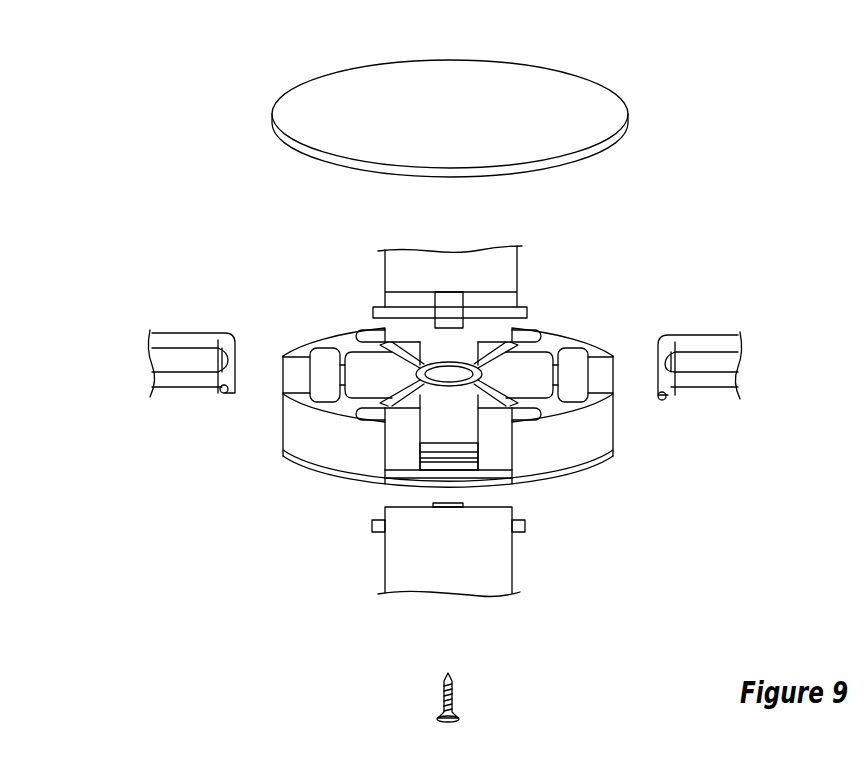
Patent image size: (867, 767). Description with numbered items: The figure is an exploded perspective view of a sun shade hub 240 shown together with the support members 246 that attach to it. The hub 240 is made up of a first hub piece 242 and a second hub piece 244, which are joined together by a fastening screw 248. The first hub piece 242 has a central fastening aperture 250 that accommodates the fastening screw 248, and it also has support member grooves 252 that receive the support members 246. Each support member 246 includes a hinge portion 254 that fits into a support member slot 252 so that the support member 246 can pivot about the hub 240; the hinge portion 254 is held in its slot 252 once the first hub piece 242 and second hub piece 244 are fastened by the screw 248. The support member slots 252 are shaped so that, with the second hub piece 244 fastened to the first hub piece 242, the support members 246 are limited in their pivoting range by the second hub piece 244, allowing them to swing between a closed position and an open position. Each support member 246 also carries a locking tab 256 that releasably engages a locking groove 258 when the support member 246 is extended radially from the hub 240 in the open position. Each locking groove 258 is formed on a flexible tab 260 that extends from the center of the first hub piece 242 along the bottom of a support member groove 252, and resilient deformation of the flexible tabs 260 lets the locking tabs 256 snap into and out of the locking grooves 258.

The sun shade hub 240 is at (210, 210).
The first hub piece 242 is at (338, 457).
The second hub piece 244 is at (628, 112).
The support member 246 is at (175, 333).
The fastening screw 248 is at (444, 700).
The central fastening aperture 250 is at (450, 378).
The support member groove 252 is at (493, 438).
The hinge portion 254 is at (377, 307).
The locking tab 256 is at (455, 305).
The locking groove 258 is at (470, 463).
The flexible tab 260 is at (432, 475).